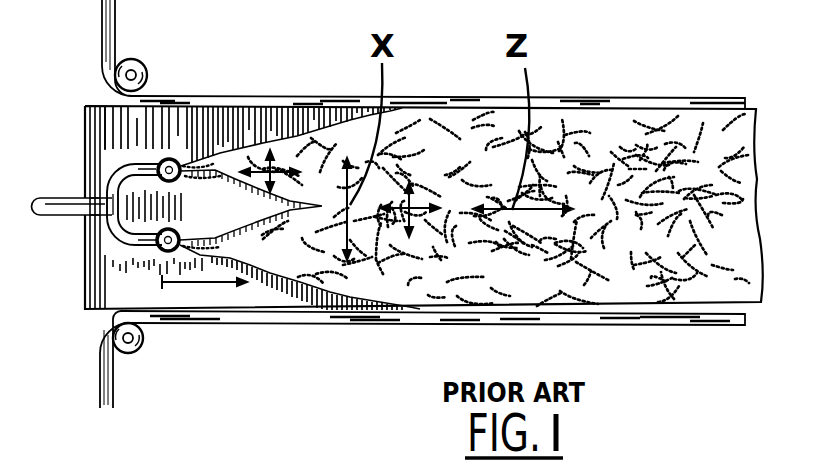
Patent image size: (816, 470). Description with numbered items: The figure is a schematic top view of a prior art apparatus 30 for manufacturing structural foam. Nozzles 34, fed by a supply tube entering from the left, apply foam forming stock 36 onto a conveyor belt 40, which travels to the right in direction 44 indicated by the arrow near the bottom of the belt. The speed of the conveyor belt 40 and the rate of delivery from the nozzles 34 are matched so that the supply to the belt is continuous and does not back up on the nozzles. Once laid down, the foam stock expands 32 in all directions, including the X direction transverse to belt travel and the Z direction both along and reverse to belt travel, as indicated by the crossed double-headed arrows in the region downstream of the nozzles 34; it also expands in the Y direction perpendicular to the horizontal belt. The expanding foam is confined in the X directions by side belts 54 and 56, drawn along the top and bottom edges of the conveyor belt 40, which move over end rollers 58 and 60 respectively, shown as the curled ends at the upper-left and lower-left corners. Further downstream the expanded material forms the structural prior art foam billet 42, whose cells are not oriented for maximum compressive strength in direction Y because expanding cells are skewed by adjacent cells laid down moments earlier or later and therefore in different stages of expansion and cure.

The prior art apparatus 30 is at (571, 97).
The foam stock expansion 32 is at (410, 210).
The nozzles 34 is at (117, 177).
The foam forming stock 36 is at (202, 167).
The conveyor belt 40 is at (238, 120).
The structural prior art foam billet 42 is at (617, 124).
The direction 44 is at (214, 284).
The side belt 54 is at (172, 102).
The side belt 56 is at (325, 323).
The end roller 58 is at (132, 59).
The end roller 60 is at (142, 343).